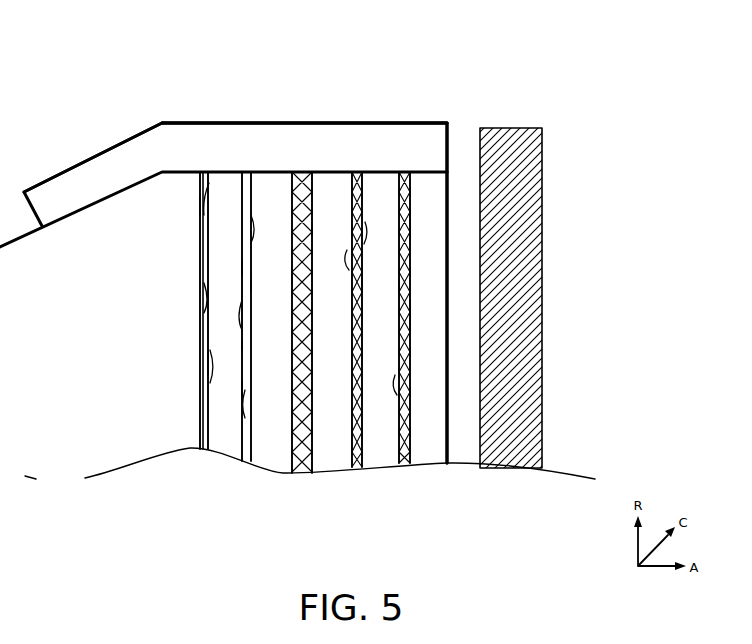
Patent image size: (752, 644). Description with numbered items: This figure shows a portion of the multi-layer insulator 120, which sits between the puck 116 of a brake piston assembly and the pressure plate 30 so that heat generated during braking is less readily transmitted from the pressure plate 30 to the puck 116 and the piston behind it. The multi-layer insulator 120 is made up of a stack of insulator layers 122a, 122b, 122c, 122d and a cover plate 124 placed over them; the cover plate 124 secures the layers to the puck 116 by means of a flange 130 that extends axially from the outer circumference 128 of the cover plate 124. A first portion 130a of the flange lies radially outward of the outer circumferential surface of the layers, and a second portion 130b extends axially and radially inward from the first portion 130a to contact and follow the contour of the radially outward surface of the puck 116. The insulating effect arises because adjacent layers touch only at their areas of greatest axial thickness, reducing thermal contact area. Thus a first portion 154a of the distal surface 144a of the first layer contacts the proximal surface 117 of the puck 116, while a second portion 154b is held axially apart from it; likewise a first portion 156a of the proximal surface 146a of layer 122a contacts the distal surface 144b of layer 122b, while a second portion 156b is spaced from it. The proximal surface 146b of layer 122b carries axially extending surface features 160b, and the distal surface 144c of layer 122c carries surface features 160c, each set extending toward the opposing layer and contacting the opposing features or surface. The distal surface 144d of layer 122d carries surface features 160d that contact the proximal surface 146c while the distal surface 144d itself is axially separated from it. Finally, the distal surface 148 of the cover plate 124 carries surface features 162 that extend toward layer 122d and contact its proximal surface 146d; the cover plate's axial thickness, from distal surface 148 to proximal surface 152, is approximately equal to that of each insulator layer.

The pressure plate 30 is at (520, 224).
The puck 116 is at (66, 330).
The proximal surface of puck 117 is at (203, 205).
The multi-layer insulator 120 is at (470, 82).
The insulator layer 122a is at (205, 111).
The insulator layer 122b is at (252, 103).
The insulator layer 122c is at (350, 111).
The insulator layer 122d is at (398, 103).
The cover plate 124 is at (401, 111).
The outer circumference of cover plate 128 is at (447, 123).
The flange 130 is at (170, 114).
The first portion of flange 130a is at (440, 61).
The second portion of flange 130b is at (90, 146).
The distal surface of insulator layer 144a is at (202, 438).
The distal surface of insulator layer 144b is at (244, 450).
The distal surface of insulator layer 144c is at (302, 195).
The distal surface of insulator layer 144d is at (357, 192).
The proximal surface of insulator layer 146a is at (250, 200).
The proximal surface of insulator layer 146b is at (295, 470).
The proximal surface of insulator layer 146c is at (362, 466).
The proximal surface of insulator layer 146d is at (408, 440).
The distal surface of cover plate 148 is at (404, 200).
The proximal surface of cover plate 152 is at (447, 440).
The first portion of distal surface 154a is at (202, 204).
The second portion of distal surface 154b is at (191, 362).
The first portion of proximal surface 156a is at (243, 390).
The second portion of proximal surface 156b is at (242, 268).
The surface features 160b is at (292, 276).
The surface features 160c is at (312, 230).
The surface features 160d is at (362, 290).
The surface features 162 is at (405, 231).